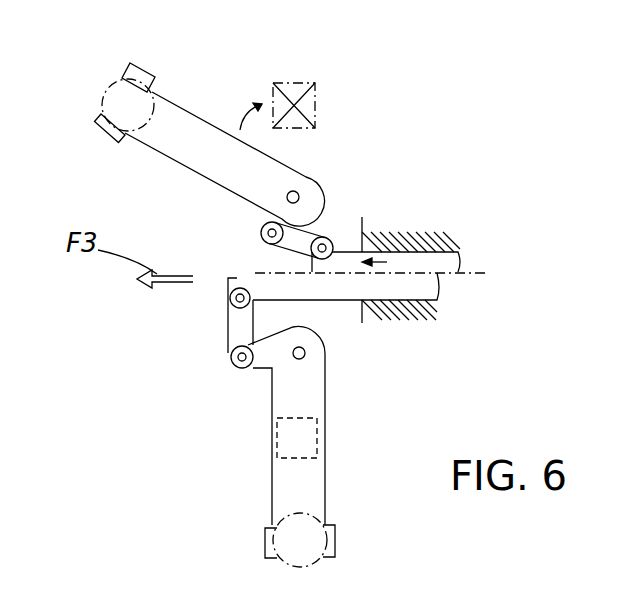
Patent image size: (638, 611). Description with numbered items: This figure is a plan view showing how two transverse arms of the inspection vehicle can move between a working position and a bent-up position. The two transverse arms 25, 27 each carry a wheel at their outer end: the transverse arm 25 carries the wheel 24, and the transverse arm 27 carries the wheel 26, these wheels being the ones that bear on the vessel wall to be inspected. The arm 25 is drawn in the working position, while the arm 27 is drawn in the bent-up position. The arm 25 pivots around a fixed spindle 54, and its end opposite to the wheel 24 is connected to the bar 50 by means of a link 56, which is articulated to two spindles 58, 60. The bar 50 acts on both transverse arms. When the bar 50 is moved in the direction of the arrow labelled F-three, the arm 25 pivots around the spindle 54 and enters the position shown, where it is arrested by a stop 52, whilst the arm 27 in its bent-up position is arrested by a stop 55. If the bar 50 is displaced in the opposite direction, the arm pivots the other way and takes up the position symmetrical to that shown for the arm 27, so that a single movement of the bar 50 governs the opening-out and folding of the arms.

The wheel 24 is at (267, 535).
The transverse arm 25 is at (280, 473).
The wheel 26 is at (103, 130).
The transverse arm 27 is at (195, 110).
The bar 50 is at (347, 262).
The stop 52 is at (317, 436).
The fixed spindle 54 is at (303, 358).
The stop 55 is at (315, 110).
The link 56 is at (237, 327).
The spindle 58 is at (239, 358).
The spindle 60 is at (242, 294).